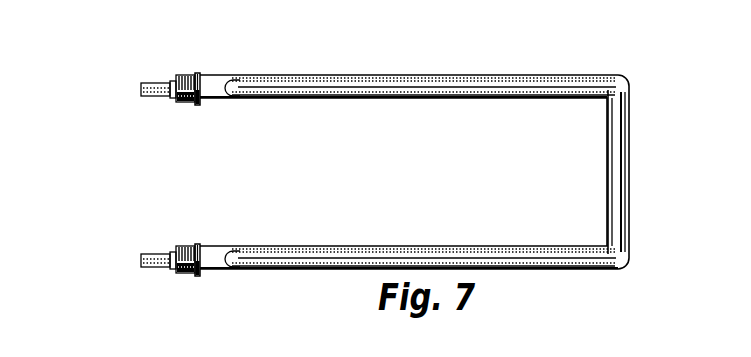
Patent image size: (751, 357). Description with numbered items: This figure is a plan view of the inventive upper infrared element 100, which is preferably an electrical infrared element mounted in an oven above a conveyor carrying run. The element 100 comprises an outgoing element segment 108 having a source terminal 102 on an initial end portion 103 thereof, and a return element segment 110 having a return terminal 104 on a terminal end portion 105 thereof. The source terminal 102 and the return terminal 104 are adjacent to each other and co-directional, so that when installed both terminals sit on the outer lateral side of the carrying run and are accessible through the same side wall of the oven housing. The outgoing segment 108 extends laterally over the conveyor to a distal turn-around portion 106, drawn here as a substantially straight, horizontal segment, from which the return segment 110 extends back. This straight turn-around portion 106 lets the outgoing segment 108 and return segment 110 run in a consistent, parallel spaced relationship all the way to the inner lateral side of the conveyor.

The upper infrared element 100 is at (328, 70).
The source terminal 102 is at (180, 75).
The initial end portion 103 is at (205, 106).
The return terminal 104 is at (187, 246).
The terminal end portion 105 is at (210, 246).
The distal turn-around portion 106 is at (622, 178).
The outgoing element segment 108 is at (423, 100).
The return element segment 110 is at (423, 246).